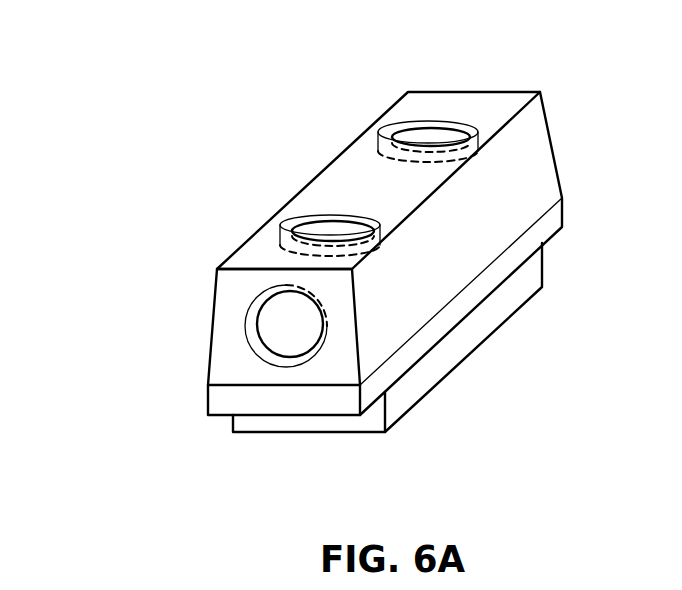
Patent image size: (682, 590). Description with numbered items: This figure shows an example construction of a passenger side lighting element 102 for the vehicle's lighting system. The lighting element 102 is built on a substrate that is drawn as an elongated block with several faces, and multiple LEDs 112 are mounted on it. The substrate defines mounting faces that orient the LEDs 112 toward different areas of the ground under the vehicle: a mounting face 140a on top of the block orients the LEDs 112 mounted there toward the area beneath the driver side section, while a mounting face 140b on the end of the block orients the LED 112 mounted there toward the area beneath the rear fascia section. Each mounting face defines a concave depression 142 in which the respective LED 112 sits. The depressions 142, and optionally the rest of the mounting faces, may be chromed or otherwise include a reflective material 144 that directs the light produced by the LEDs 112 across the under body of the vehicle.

The passenger side lighting element 102 is at (543, 263).
The LED 112 is at (427, 140).
The mounting face 140a is at (255, 250).
The mounting face 140b is at (237, 287).
The concave depression 142 is at (469, 118).
The reflective material 144 is at (395, 125).